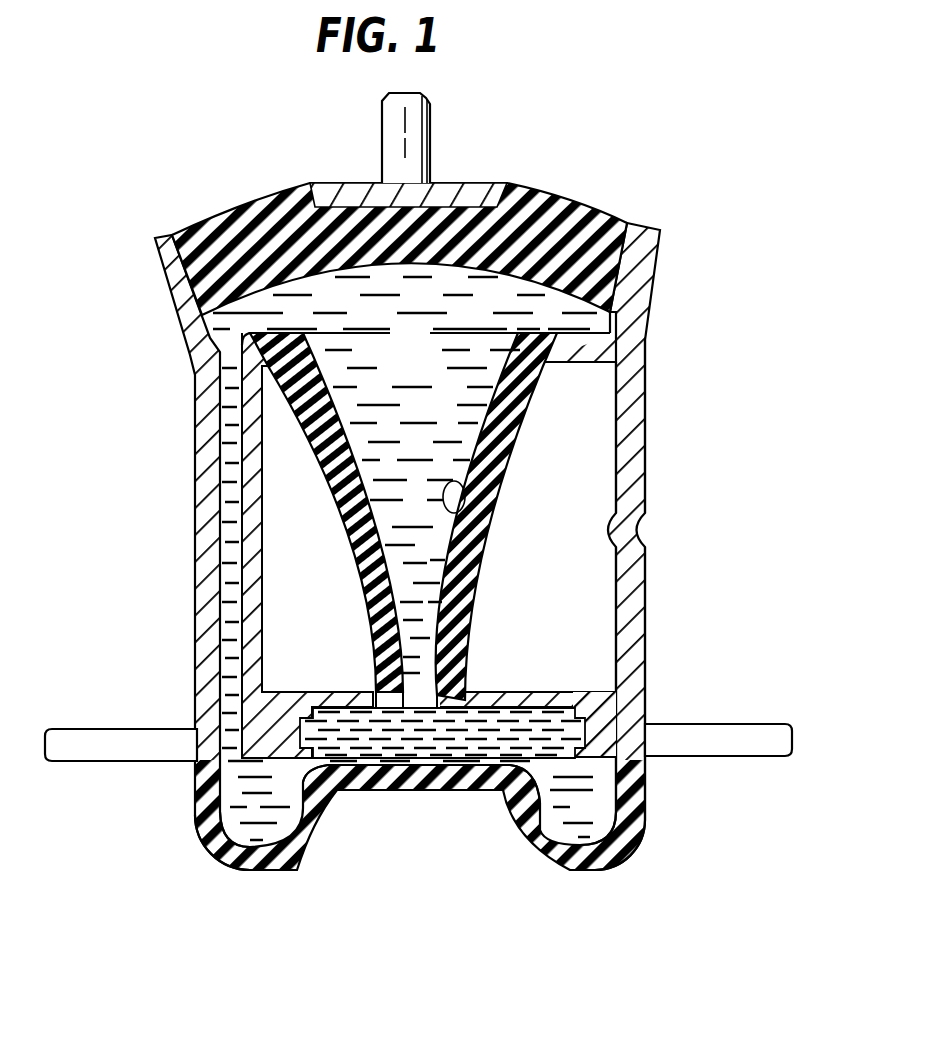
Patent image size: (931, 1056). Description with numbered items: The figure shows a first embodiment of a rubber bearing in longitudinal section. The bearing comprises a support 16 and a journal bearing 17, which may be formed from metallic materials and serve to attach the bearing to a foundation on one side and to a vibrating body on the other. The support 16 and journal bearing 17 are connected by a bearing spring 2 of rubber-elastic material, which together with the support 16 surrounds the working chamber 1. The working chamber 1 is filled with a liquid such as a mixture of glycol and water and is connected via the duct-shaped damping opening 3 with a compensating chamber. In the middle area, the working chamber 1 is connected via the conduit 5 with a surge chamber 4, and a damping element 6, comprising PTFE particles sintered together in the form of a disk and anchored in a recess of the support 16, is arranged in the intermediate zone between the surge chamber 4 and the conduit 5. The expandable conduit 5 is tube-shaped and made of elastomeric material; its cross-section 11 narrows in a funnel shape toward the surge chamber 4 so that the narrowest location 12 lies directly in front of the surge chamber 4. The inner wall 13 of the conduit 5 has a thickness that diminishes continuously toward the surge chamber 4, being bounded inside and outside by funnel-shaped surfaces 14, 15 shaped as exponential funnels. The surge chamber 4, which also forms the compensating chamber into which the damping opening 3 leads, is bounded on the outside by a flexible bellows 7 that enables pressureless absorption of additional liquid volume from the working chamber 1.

The working chamber 1 is at (297, 313).
The bearing spring 2 is at (536, 206).
The damping opening 3 is at (226, 398).
The surge chamber 4 is at (390, 753).
The conduit 5 is at (398, 538).
The damping element 6 is at (492, 727).
The flexible bellows 7 is at (233, 847).
The cross-section 11 is at (429, 535).
The narrowest location 12 is at (496, 715).
The inner wall 13 is at (503, 417).
The funnel-shaped surface 14 is at (463, 481).
The funnel-shaped surface 15 is at (468, 600).
The support 16 is at (626, 641).
The journal bearing 17 is at (374, 197).